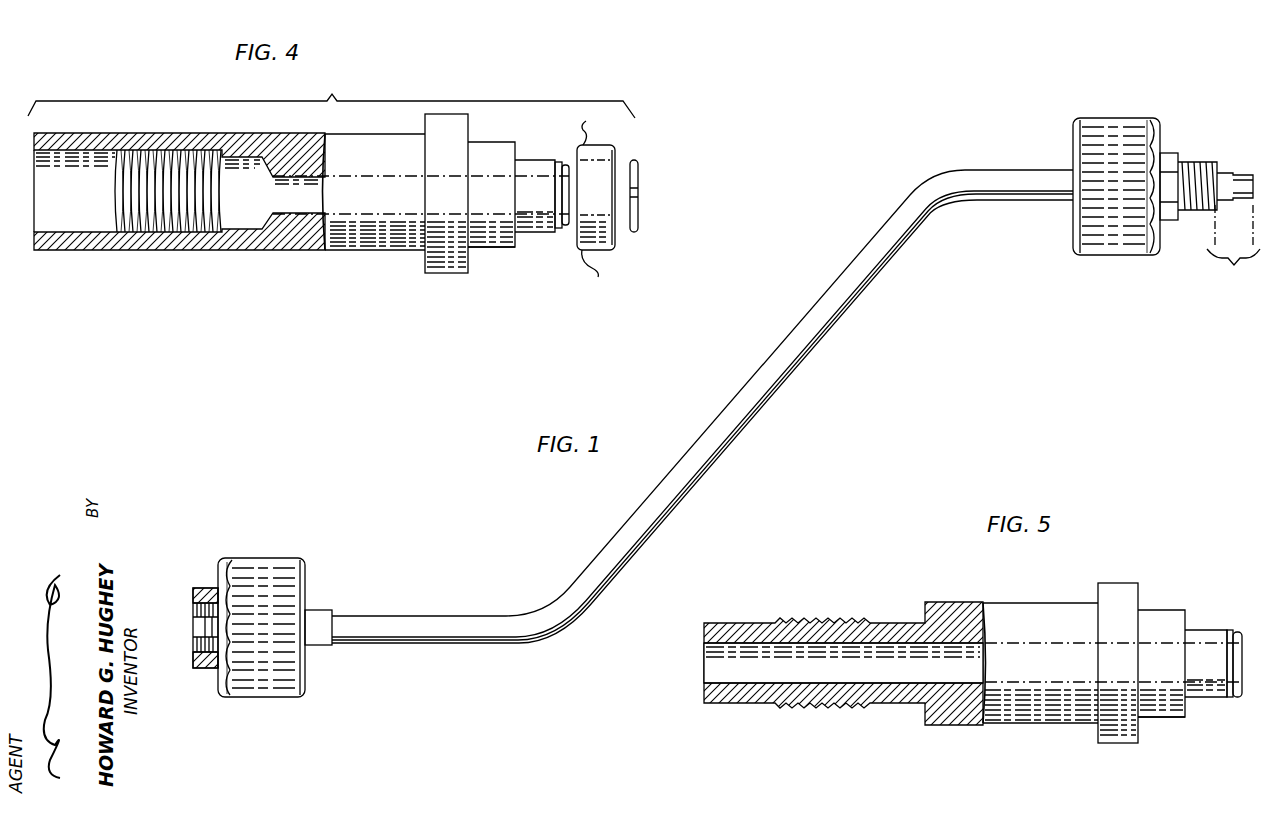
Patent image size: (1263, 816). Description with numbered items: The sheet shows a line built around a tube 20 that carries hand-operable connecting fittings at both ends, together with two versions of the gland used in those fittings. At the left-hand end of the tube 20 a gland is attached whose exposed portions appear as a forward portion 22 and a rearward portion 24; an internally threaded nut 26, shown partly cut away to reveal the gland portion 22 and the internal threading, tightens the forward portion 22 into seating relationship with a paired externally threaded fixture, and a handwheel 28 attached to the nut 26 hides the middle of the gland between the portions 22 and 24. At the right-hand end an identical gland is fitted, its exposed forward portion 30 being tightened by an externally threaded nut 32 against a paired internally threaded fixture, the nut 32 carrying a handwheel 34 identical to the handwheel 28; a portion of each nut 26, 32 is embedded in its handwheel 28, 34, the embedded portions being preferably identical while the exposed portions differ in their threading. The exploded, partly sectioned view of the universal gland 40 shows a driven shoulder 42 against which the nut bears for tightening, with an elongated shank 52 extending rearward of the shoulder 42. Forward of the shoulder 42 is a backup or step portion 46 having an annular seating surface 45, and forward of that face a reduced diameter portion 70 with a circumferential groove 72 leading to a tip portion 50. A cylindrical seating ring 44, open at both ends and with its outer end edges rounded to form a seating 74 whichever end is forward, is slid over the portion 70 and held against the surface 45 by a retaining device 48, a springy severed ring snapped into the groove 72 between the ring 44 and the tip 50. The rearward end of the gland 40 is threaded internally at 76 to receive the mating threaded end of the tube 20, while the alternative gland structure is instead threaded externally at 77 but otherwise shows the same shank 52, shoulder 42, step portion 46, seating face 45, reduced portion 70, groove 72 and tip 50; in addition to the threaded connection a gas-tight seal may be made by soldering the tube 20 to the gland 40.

In FIG. 1, the tube 20 is at (713, 418).
In FIG. 1, the forward portion of the gland 22 is at (200, 622).
In FIG. 1, the exposed portion of the gland 24 is at (322, 612).
In FIG. 1, the internally threaded nut 26 is at (205, 660).
In FIG. 1, the handwheel 28 is at (255, 683).
In FIG. 1, the forward portion of the gland 30 is at (1233, 243).
In FIG. 1, the externally threaded nut 32 is at (1188, 165).
In FIG. 1, the handwheel 34 is at (1112, 252).
In FIG. 4, the universal gland 40 is at (331, 96).
In FIG. 4, the driven shoulder 42 is at (435, 262).
In FIG. 5, the driven shoulder 42 is at (1118, 590).
In FIG. 4, the seating ring 44 is at (610, 228).
In FIG. 4, the annular seating surface 45 is at (513, 250).
In FIG. 5, the annular seating surface 45 is at (1186, 714).
In FIG. 4, the backup portion 46 is at (487, 250).
In FIG. 5, the backup portion 46 is at (1160, 615).
In FIG. 4, the retaining device 48 is at (638, 172).
In FIG. 4, the tip portion 50 is at (565, 228).
In FIG. 5, the tip portion 50 is at (1238, 698).
In FIG. 4, the elongated shank 52 is at (340, 245).
In FIG. 5, the elongated shank 52 is at (1050, 603).
In FIG. 4, the reduced diameter portion 70 is at (538, 160).
In FIG. 5, the reduced diameter portion 70 is at (1205, 632).
In FIG. 4, the circumferential groove 72 is at (557, 228).
In FIG. 5, the circumferential groove 72 is at (1229, 698).
In FIG. 4, the rounded seating edges 74 is at (596, 202).
In FIG. 4, the internal threading 76 is at (148, 222).
In FIG. 5, the external threading 77 is at (842, 620).